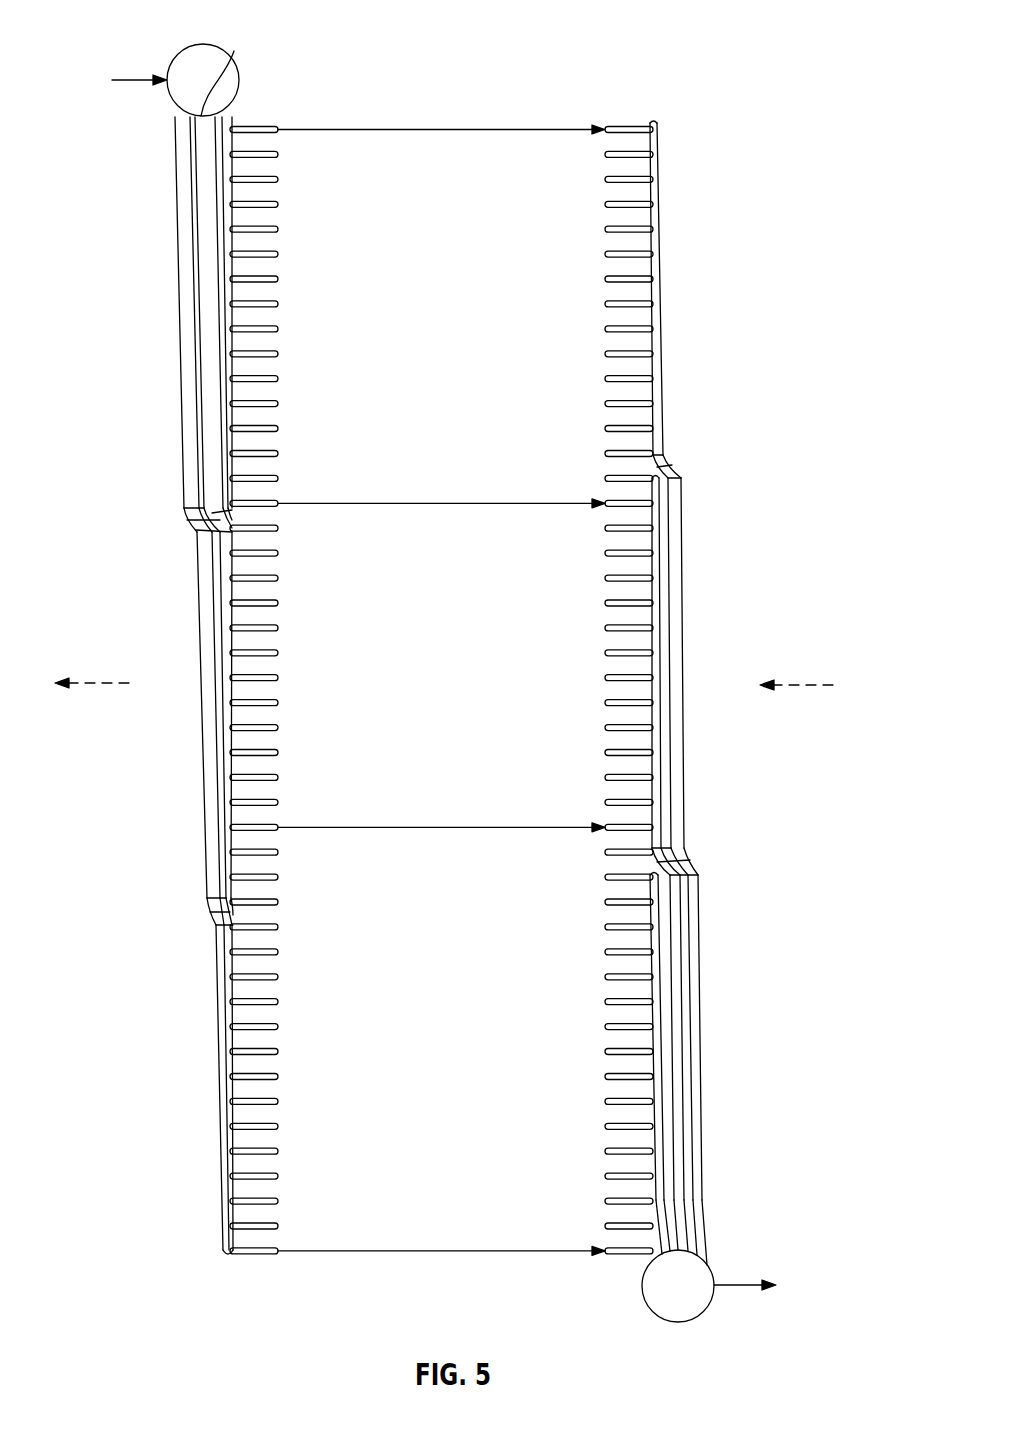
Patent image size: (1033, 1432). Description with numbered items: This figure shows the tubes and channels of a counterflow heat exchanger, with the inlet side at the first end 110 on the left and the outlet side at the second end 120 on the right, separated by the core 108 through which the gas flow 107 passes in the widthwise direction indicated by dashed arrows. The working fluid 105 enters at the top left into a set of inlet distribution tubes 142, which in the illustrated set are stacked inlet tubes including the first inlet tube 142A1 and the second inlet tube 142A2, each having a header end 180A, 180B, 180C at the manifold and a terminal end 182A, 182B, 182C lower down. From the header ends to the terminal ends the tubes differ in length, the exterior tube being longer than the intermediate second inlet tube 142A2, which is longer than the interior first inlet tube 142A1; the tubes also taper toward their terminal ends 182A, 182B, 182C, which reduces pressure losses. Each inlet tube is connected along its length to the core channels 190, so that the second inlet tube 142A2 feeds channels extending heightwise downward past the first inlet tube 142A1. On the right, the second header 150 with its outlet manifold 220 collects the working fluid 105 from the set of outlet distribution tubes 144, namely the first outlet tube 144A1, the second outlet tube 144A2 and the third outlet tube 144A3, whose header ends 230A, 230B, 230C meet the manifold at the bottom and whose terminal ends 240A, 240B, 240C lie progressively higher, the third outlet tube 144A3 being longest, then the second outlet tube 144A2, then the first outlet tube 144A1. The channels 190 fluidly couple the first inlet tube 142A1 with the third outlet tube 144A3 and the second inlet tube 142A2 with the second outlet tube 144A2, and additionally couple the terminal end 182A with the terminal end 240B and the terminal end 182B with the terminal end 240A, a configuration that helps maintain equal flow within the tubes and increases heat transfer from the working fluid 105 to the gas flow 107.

The working fluid 105 is at (155, 80).
The gas flow 107 is at (97, 683).
The core 108 is at (464, 459).
The first end 110 is at (172, 479).
The second end 120 is at (675, 297).
The inlet distribution tubes 142 is at (125, 402).
The first inlet tube 142A1 is at (237, 393).
The second inlet tube 142A2 is at (227, 765).
The outlet distribution tubes 144 is at (735, 145).
The first outlet tube 144A1 is at (655, 1080).
The second outlet tube 144A2 is at (655, 665).
The third outlet tube 144A3 is at (670, 463).
The second header 150 is at (718, 1270).
The header end of first inlet tube 180A is at (235, 119).
The header end of second inlet tube 180B is at (233, 50).
The header end of third inlet tube 180C is at (178, 128).
The terminal end of first inlet tube 182A is at (212, 515).
The terminal end of second inlet tube 182B is at (213, 918).
The terminal end of third inlet tube 182C is at (226, 1255).
The core channels 190 is at (606, 955).
The outlet manifold 220 is at (720, 1280).
The header end of first outlet tube 230A is at (645, 1257).
The header end of second outlet tube 230B is at (665, 1245).
The header end of third outlet tube 230C is at (705, 1243).
The terminal end of first outlet tube 240A is at (685, 855).
The terminal end of second outlet tube 240B is at (655, 470).
The terminal end of third outlet tube 240C is at (650, 125).